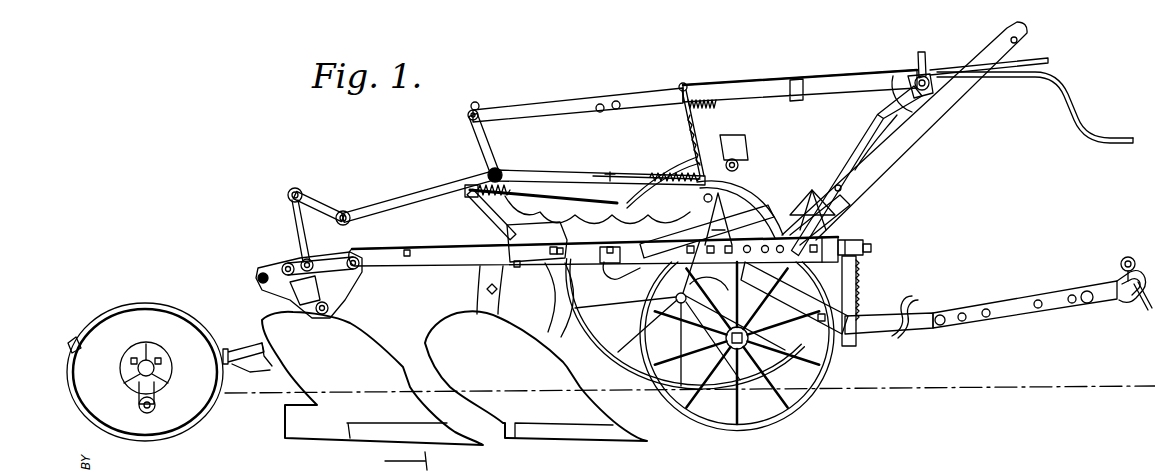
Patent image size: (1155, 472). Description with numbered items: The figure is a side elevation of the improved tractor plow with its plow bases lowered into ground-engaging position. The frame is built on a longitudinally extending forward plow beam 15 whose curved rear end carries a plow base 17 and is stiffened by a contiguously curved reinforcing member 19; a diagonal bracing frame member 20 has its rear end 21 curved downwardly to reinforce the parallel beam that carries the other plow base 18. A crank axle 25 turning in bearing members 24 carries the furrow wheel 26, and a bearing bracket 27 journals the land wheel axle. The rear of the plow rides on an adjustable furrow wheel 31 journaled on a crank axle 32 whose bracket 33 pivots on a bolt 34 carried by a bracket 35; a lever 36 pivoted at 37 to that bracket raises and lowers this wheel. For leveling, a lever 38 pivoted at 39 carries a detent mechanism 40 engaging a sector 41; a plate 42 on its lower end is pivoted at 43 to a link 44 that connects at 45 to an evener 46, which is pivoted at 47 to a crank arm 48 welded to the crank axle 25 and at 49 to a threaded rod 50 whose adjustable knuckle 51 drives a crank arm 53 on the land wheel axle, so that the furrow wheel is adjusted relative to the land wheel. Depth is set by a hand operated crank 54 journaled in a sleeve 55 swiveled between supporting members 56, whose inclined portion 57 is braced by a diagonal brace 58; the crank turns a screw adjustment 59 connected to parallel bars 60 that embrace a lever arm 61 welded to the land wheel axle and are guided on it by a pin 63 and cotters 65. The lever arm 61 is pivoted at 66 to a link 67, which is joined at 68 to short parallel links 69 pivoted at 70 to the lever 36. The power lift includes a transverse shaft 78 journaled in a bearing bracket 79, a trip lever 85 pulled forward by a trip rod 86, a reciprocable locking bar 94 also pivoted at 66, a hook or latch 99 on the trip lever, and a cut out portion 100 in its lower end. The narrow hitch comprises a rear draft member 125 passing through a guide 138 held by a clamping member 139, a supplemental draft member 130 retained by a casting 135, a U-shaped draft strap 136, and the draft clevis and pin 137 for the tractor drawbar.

The forward plow beam 15 is at (747, 240).
The plow base 17 is at (566, 377).
The plow base 18 is at (370, 352).
The reinforcing member 19 is at (478, 296).
The bracing frame member 20 is at (428, 249).
The curved rear end 21 is at (372, 264).
The bearing members 24 is at (566, 272).
The crank axle 25 is at (637, 292).
The furrow wheel 26 is at (833, 362).
The bearing bracket 27 is at (512, 246).
The adjustable furrow wheel 31 is at (157, 306).
The crank axle 32 is at (224, 348).
The bracket 33 is at (238, 368).
The bolt 34 is at (266, 358).
The bracket 35 is at (285, 263).
The lever 36 is at (293, 218).
The pivot 37 is at (312, 260).
The lever 38 is at (922, 128).
The pivot 39 is at (797, 278).
The detent mechanism 40 is at (842, 200).
The sector 41 is at (810, 190).
The plate 42 is at (792, 200).
The pivotal connection 43 is at (752, 200).
The link 44 is at (742, 186).
The pivotal connection 45 is at (707, 233).
The evener 46 is at (596, 240).
The pivotal connection 47 is at (640, 175).
The crank arm 48 is at (627, 263).
The pivotal connection 49 is at (617, 173).
The link or rod 50 is at (567, 197).
The adjustable knuckle 51 is at (468, 185).
The crank arm 53 is at (492, 216).
The hand operated crank 54 is at (1080, 115).
The bearing or sleeve 55 is at (926, 70).
The supporting members 56 is at (900, 80).
The inclined portion 57 is at (886, 160).
The diagonal brace 58 is at (870, 127).
The screw adjustment 59 is at (740, 135).
The parallel straps or bars 60 is at (562, 103).
The lever arm 61 is at (490, 140).
The transverse pin 63 is at (468, 115).
The pins or cotters 65 is at (479, 106).
The pivotal connection 66 is at (499, 170).
The link 67 is at (412, 197).
The pivotal connection 68 is at (347, 213).
The short parallel links 69 is at (323, 207).
The pivotal connection 70 is at (296, 188).
The transverse shaft 78 is at (688, 170).
The bearing bracket 79 is at (646, 222).
The trip lever 85 is at (703, 162).
The trip rod 86 is at (1030, 60).
The locking bar 94 is at (540, 172).
The hook or latch 99 is at (738, 160).
The cut out portion 100 is at (871, 247).
The rear draft member 125 is at (877, 325).
The supplemental draft member 130 is at (1013, 300).
The casting 135 is at (910, 312).
The U-shaped draft strap 136 is at (1102, 304).
The draft clevis and pin 137 is at (1124, 258).
The drawbar guide 138 is at (856, 296).
The clamping member 139 is at (852, 240).